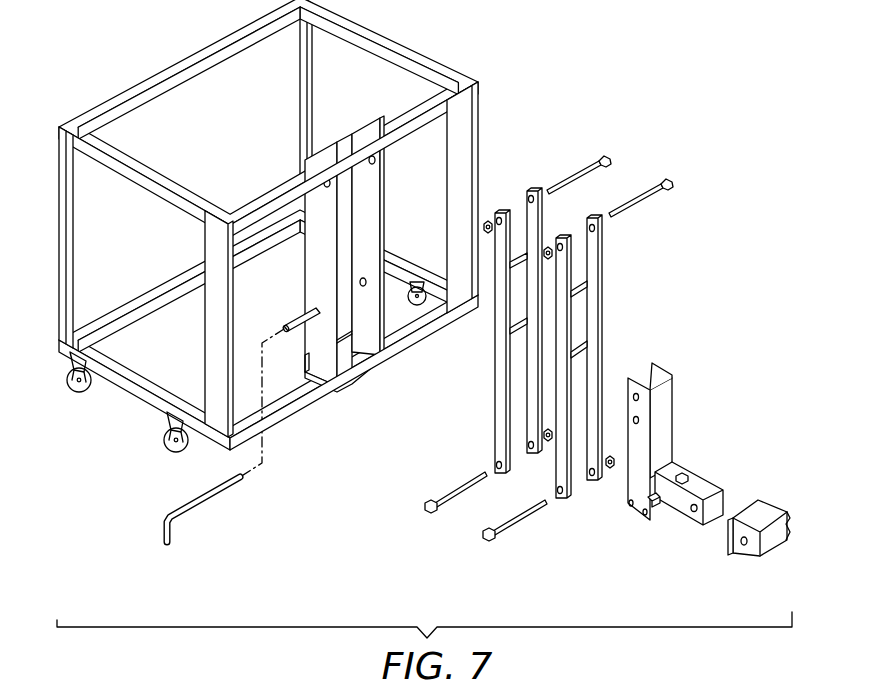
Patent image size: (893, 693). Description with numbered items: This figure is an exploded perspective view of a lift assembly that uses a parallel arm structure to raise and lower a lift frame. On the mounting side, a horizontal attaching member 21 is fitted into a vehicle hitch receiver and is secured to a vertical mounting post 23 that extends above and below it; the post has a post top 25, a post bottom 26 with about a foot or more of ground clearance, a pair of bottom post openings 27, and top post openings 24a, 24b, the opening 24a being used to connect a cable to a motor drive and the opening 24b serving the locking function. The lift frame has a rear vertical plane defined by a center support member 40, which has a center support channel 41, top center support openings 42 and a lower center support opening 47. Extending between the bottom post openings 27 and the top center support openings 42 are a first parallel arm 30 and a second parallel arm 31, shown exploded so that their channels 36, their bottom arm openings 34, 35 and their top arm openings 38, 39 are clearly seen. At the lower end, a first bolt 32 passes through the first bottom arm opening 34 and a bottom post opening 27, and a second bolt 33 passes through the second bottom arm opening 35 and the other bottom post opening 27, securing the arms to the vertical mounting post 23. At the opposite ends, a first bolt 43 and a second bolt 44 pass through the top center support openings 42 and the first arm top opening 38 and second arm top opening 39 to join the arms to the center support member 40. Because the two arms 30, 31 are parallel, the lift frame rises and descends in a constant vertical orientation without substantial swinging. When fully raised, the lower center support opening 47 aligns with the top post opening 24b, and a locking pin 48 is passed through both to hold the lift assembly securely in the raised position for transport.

The horizontal attaching member 21 is at (750, 559).
The vertical mounting post 23 is at (681, 450).
The top post opening 24a is at (645, 378).
The top post opening 24b is at (640, 423).
The post top 25 is at (668, 379).
The post bottom 26 is at (660, 520).
The bottom post openings 27 is at (645, 516).
The first parallel arm 30 is at (607, 381).
The second parallel arm 31 is at (537, 332).
The first bolt 32 is at (522, 519).
The second bolt 33 is at (445, 493).
The first bottom arm opening 34 is at (591, 480).
The second bottom arm opening 35 is at (530, 446).
The channels 36 is at (537, 332).
The first arm top opening 38 is at (593, 230).
The second arm top opening 39 is at (530, 191).
The center support member 40 is at (336, 255).
The center support channel 41 is at (347, 384).
The top center support openings 42 is at (358, 157).
The first bolt 43 is at (594, 166).
The second bolt 44 is at (648, 191).
The lower center support opening 47 is at (283, 328).
The locking pin 48 is at (216, 495).